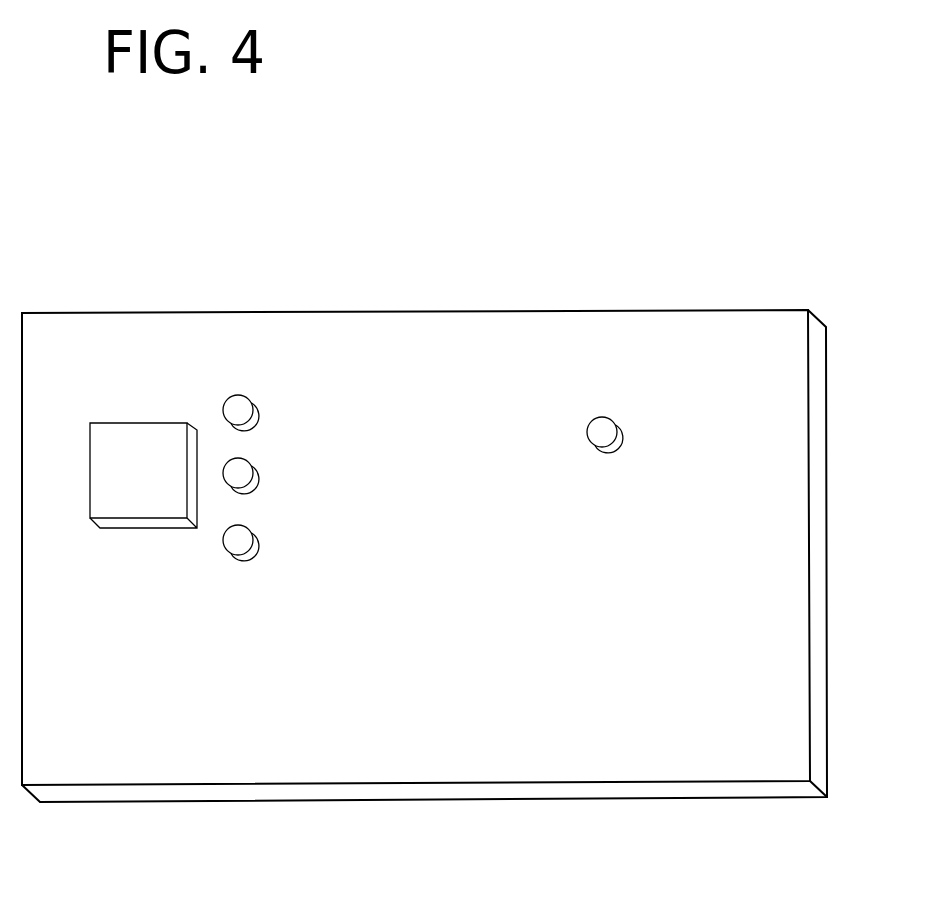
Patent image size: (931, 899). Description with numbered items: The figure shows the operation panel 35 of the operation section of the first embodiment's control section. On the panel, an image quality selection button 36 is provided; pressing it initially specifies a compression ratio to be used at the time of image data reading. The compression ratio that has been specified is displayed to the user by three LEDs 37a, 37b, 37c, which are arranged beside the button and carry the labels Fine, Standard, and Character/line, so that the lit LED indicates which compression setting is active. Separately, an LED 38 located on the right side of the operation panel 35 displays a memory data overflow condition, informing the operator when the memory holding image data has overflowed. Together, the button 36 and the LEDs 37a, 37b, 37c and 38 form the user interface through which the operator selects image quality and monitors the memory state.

The operation panel 35 is at (488, 353).
The image quality selection button 36 is at (134, 447).
The LED 37a is at (243, 396).
The LED 37b is at (226, 467).
The LED 37c is at (230, 557).
The LED 38 is at (608, 417).